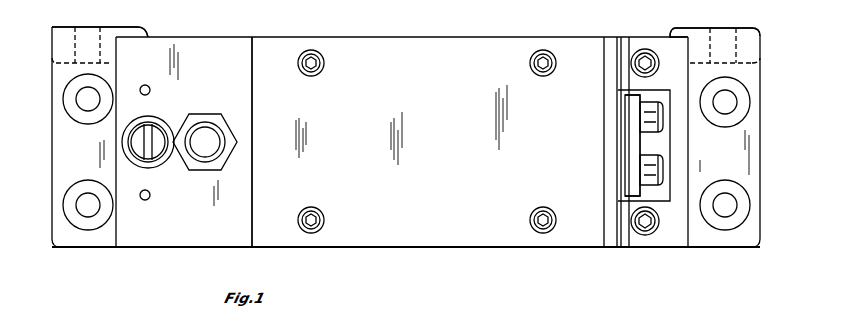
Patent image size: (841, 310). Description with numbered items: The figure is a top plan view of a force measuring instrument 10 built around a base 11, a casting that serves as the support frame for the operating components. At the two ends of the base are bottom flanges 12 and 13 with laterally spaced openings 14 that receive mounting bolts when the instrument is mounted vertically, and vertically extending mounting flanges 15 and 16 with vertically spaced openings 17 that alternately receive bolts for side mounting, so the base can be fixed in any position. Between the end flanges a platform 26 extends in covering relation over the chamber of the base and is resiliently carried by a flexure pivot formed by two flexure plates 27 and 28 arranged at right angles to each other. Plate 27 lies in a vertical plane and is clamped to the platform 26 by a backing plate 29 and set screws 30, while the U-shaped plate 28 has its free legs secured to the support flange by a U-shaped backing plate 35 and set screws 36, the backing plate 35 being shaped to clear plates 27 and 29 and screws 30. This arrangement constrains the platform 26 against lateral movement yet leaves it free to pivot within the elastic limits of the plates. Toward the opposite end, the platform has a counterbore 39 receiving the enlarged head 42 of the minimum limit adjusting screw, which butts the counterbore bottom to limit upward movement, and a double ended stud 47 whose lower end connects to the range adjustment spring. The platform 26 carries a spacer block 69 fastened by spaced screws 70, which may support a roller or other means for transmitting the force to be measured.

The force measuring instrument 10 is at (148, 248).
The base 11 is at (87, 246).
The bottom flange 12 is at (52, 150).
The bottom flange 13 is at (755, 236).
The openings 14 is at (86, 104).
The mounting flange 15 is at (58, 42).
The mounting flange 16 is at (762, 40).
The openings 17 is at (100, 28).
The platform 26 is at (276, 37).
The flexure plate 27 is at (620, 162).
The flexure plate 28 is at (622, 248).
The backing plate 29 is at (628, 117).
The set screws 30 is at (663, 165).
The backing plate 35 is at (682, 240).
The set screws 36 is at (653, 52).
The counterbore 39 is at (150, 192).
The enlarged head 42 is at (154, 128).
The double ended stud 47 is at (205, 128).
The spacer block 69 is at (428, 112).
The screws 70 is at (313, 78).